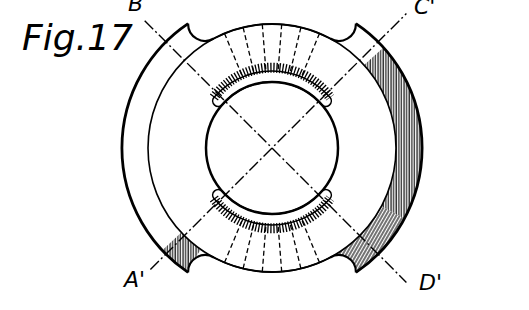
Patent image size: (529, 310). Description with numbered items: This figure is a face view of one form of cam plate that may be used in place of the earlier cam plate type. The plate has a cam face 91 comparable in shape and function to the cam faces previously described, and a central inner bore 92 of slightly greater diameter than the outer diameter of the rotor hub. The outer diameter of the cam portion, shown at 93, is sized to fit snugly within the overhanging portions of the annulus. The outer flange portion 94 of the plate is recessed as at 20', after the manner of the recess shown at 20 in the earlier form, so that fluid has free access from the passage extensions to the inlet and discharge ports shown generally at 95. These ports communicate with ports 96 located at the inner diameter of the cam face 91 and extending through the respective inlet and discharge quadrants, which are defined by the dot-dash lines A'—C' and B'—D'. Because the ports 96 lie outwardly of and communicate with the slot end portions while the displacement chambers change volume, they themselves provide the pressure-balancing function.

The recess 20 is at (267, 19).
The recess 20' is at (272, 281).
The cam face 91 is at (369, 133).
The inner bore 92 is at (338, 148).
The outer diameter of the cam portion 93 is at (371, 73).
The outer flange portion 94 is at (403, 98).
The inlet and discharge ports 95 is at (299, 38).
The ports 96 is at (223, 91).